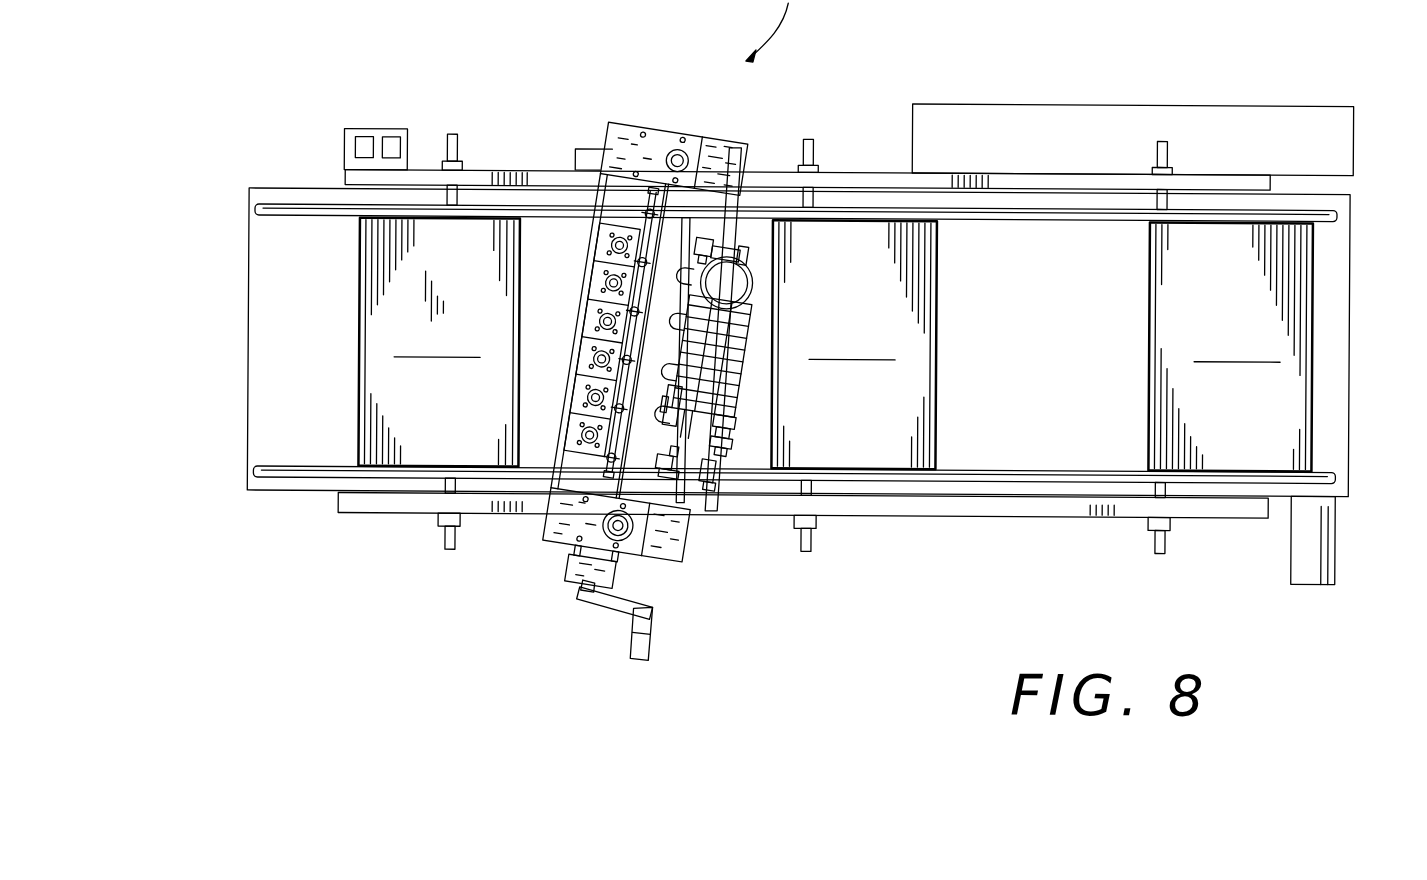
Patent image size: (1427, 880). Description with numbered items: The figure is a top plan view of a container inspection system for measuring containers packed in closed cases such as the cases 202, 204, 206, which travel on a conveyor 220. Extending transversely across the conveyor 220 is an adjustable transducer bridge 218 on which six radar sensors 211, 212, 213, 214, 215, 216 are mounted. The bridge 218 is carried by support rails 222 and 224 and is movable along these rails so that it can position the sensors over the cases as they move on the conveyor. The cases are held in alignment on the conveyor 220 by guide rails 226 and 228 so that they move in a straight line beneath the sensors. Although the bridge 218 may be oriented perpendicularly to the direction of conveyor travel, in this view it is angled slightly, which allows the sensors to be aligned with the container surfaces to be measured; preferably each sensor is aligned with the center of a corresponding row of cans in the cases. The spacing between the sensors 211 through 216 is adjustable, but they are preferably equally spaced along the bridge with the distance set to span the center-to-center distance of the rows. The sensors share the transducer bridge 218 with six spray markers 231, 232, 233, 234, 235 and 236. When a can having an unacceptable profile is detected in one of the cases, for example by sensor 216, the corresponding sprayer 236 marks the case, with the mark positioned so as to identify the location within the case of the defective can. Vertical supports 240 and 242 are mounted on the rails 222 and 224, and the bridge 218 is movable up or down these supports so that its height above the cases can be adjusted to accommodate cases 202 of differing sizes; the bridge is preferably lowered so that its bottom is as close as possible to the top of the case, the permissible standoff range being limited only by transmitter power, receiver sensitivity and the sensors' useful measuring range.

The case 202 is at (373, 418).
The case 204 is at (940, 424).
The case 206 is at (1290, 420).
The radar sensor 211 is at (578, 430).
The radar sensor 212 is at (586, 390).
The radar sensor 213 is at (592, 352).
The radar sensor 214 is at (598, 312).
The radar sensor 215 is at (604, 275).
The radar sensor 216 is at (605, 243).
The transducer bridge 218 is at (660, 130).
The conveyor 220 is at (264, 346).
The support rail 222 is at (863, 176).
The support rail 224 is at (778, 510).
The guide rail 226 is at (278, 207).
The guide rail 228 is at (307, 478).
The spray marker 231 is at (658, 460).
The spray marker 232 is at (712, 441).
The spray marker 233 is at (716, 378).
The spray marker 234 is at (758, 332).
The spray marker 235 is at (757, 266).
The spray marker 236 is at (690, 238).
The vertical support 240 is at (679, 156).
The vertical support 242 is at (628, 526).